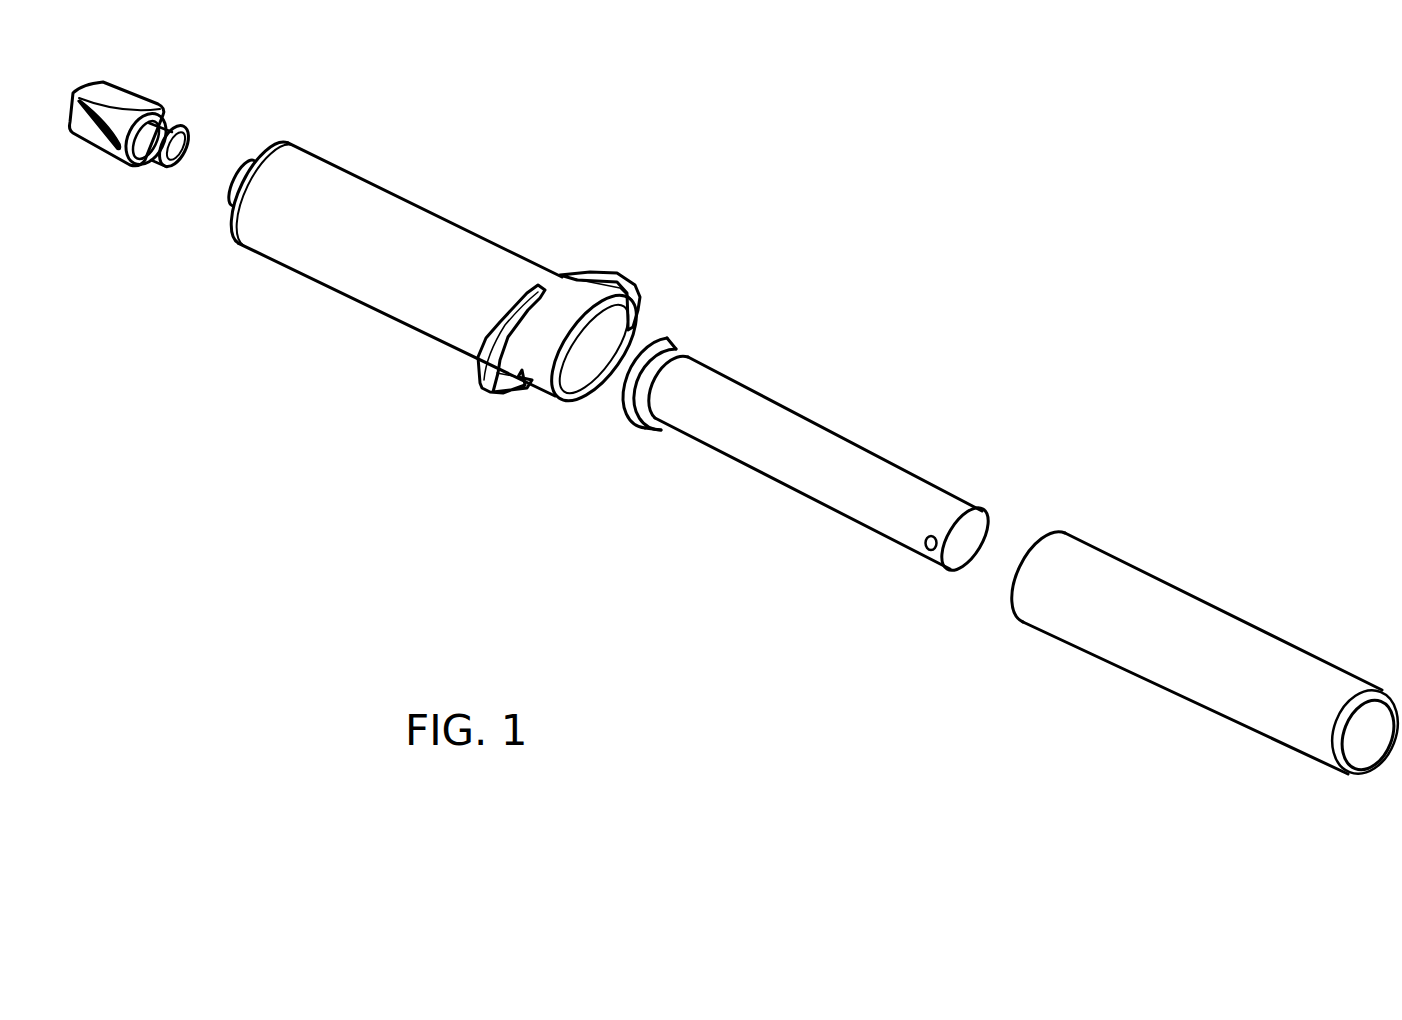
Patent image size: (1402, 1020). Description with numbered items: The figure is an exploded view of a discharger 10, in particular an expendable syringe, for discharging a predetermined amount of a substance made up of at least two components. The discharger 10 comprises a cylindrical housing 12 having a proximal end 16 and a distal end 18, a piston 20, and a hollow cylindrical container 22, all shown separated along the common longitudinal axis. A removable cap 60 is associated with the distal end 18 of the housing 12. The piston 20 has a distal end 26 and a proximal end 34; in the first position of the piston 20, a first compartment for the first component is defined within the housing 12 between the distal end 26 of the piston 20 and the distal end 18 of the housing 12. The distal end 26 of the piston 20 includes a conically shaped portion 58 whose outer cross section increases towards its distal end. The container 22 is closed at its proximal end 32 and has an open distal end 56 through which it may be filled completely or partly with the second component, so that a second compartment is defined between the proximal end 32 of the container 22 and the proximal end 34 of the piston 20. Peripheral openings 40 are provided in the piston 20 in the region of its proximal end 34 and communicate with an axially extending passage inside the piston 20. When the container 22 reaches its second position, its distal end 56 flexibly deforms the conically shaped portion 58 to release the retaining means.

The discharger 10 is at (748, 258).
The cylindrical housing 12 is at (395, 213).
The proximal end of the housing 16 is at (557, 397).
The distal end of the housing 18 is at (267, 147).
The piston 20 is at (858, 505).
The hollow cylindrical container 22 is at (1140, 689).
The distal end of the piston 26 is at (620, 418).
The proximal end of the container 32 is at (1360, 757).
The proximal end of the piston 34 is at (973, 523).
The peripheral openings 40 is at (930, 549).
The open distal end of the container 56 is at (1017, 608).
The conically shaped portion 58 is at (645, 414).
The removable cap 60 is at (122, 97).